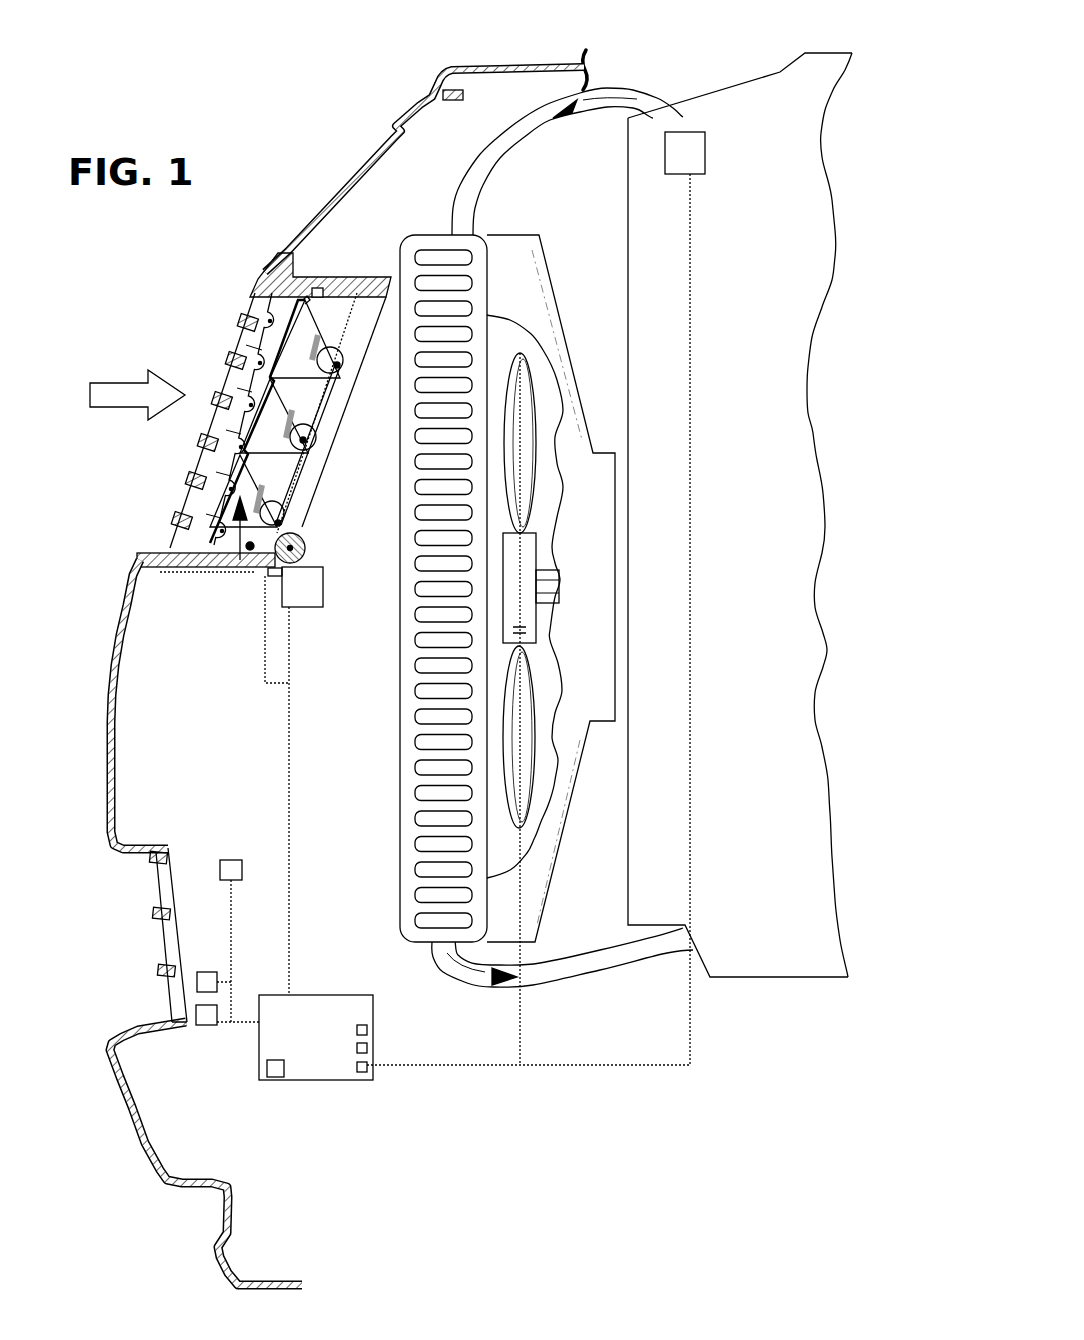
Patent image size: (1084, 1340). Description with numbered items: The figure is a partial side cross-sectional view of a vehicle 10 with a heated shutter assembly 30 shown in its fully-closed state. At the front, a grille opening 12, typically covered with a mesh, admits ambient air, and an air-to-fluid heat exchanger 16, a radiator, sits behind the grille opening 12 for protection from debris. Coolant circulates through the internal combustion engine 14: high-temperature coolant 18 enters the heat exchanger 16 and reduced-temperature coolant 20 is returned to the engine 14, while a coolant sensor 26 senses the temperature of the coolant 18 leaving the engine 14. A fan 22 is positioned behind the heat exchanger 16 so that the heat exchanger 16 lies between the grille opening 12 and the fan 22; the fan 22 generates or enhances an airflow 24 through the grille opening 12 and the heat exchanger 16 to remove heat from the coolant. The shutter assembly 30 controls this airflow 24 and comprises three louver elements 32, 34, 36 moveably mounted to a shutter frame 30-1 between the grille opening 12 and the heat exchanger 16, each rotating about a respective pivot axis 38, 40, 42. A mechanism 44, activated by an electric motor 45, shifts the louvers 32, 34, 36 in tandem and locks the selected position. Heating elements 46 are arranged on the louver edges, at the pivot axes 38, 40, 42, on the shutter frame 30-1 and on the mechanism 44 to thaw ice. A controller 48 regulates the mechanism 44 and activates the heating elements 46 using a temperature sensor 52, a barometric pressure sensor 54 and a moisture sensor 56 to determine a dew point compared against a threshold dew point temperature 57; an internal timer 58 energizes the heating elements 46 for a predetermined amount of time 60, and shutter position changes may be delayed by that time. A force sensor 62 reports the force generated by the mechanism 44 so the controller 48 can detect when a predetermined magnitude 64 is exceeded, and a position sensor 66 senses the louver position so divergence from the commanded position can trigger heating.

The vehicle 10 is at (727, 62).
The grille opening 12 is at (226, 315).
The internal combustion engine 14 is at (752, 301).
The air-to-fluid heat exchanger 16 is at (400, 822).
The high-temperature coolant 18 is at (609, 96).
The reduced-temperature coolant 20 is at (483, 980).
The fan 22 is at (538, 557).
The airflow 24 is at (120, 396).
The coolant sensor 26 is at (706, 150).
The shutter assembly 30 is at (228, 560).
The shutter frame 30-1 is at (183, 568).
The louver element 32 is at (212, 490).
The louver element 34 is at (218, 413).
The louver element 36 is at (262, 350).
The pivot axis 38 is at (250, 552).
The pivot axis 40 is at (310, 446).
The pivot axis 42 is at (335, 350).
The mechanism 44 is at (314, 549).
The electric motor 45 is at (314, 597).
The heating element 46 is at (240, 386).
The controller 48 is at (306, 1032).
The temperature sensor 52 is at (218, 866).
The barometric pressure sensor 54 is at (207, 1026).
The moisture sensor 56 is at (206, 972).
The threshold dew point temperature 57 is at (366, 1028).
The internal timer 58 is at (275, 1078).
The predetermined amount of time 60 is at (366, 1047).
The force sensor 62 is at (272, 579).
The predetermined magnitude 64 is at (366, 1066).
The position sensor 66 is at (328, 289).